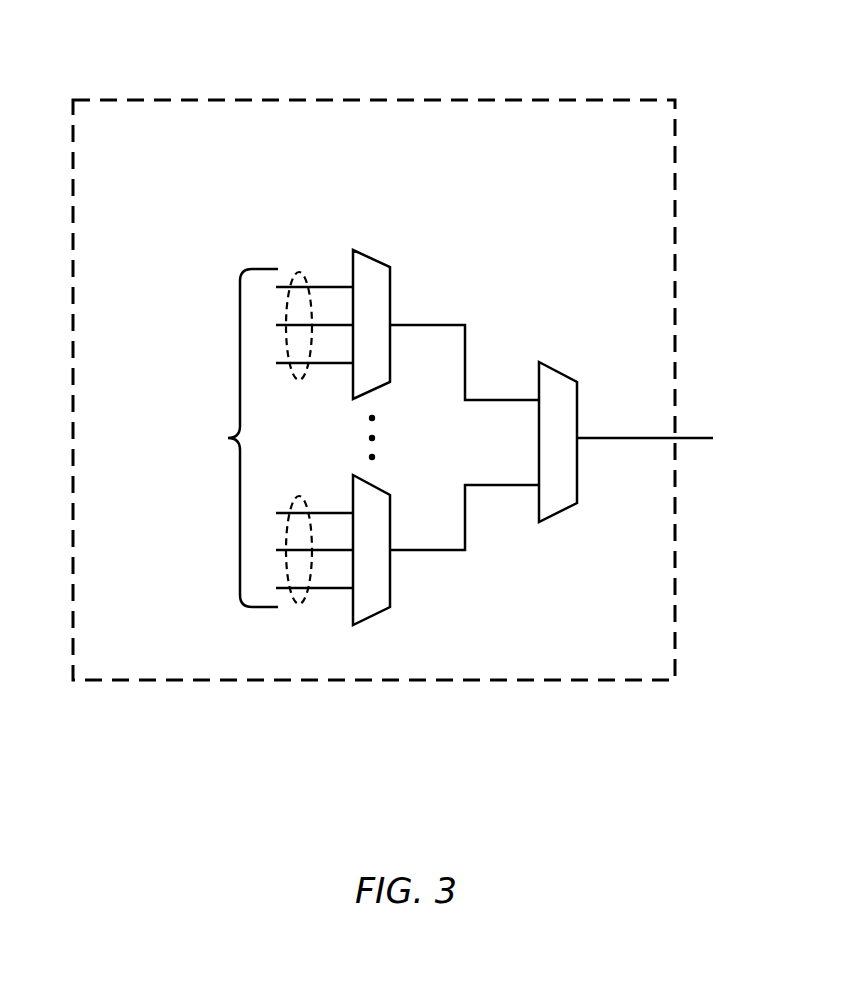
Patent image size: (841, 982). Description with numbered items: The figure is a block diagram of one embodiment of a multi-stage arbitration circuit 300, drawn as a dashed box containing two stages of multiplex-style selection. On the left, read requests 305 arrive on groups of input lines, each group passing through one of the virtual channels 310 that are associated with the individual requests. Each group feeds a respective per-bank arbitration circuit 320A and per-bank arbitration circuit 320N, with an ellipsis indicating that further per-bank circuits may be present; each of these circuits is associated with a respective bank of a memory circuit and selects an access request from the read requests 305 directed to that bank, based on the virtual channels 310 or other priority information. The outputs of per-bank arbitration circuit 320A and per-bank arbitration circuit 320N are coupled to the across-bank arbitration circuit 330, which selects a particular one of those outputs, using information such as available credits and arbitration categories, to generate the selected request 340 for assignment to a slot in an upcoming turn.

The arbitration circuit 300 is at (472, 99).
The read requests 305 is at (230, 438).
The virtual channels 310 is at (300, 383).
The per-bank arbitration circuit 320A is at (380, 264).
The per-bank arbitration circuit 320N is at (392, 591).
The across-bank arbitration circuit 330 is at (576, 379).
The selected request 340 is at (697, 439).